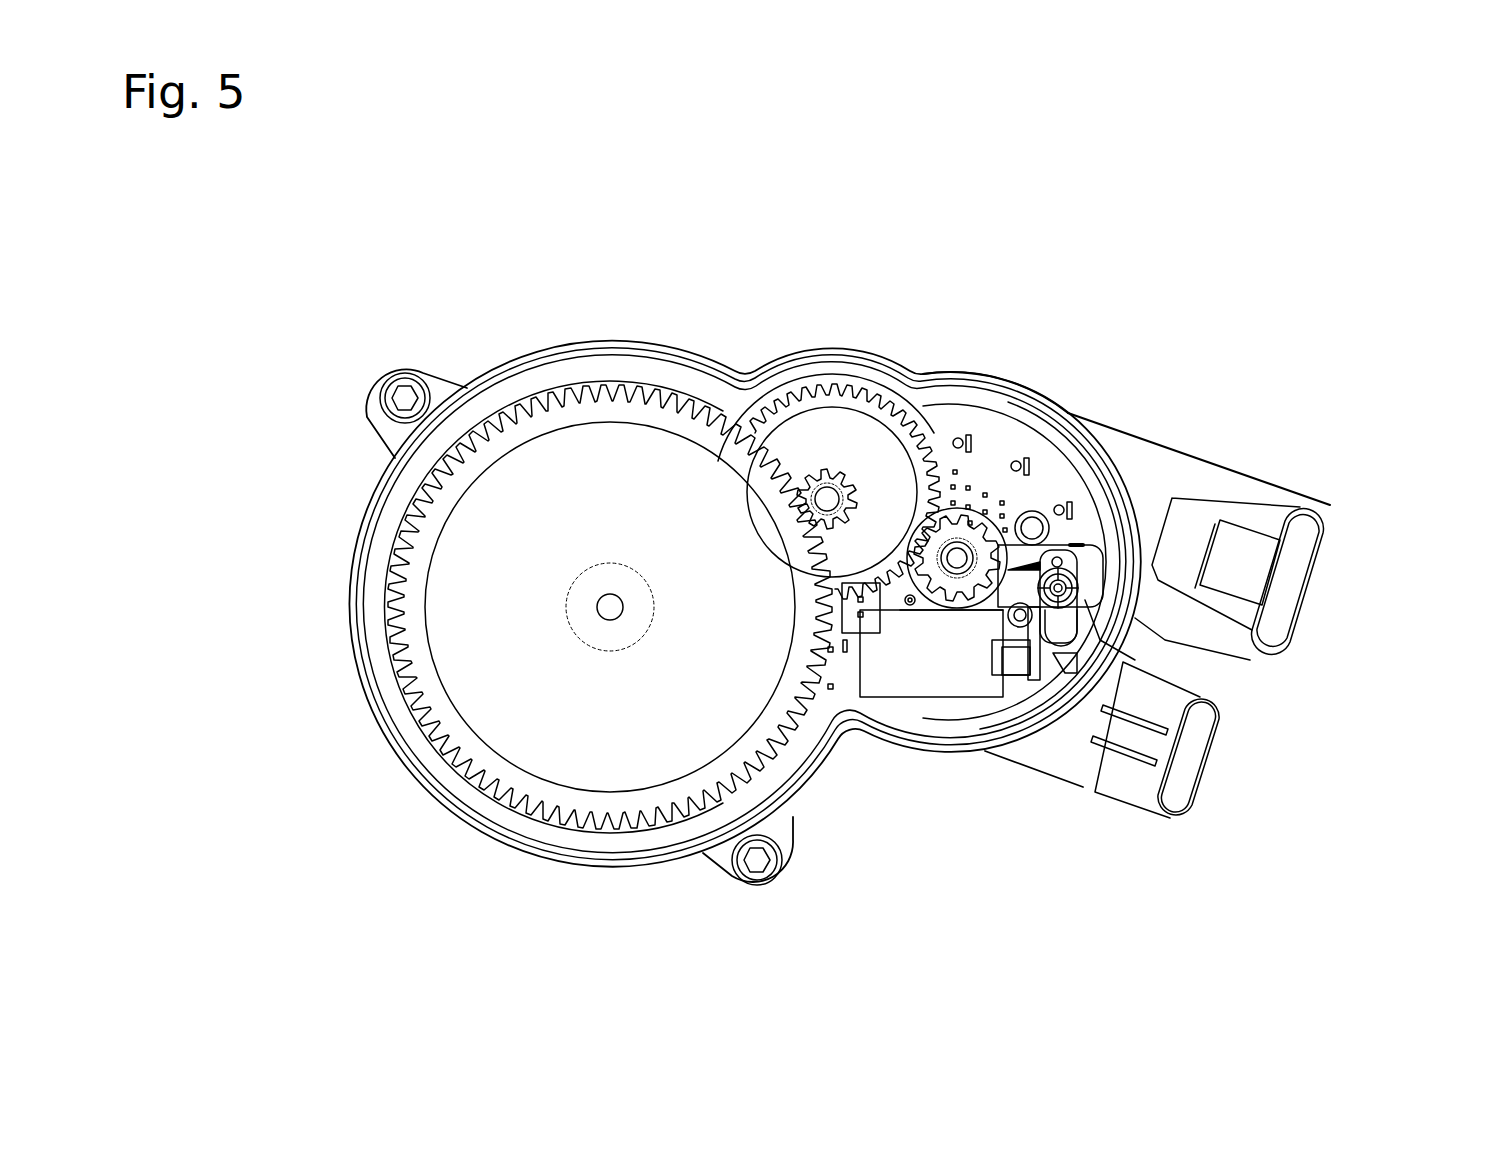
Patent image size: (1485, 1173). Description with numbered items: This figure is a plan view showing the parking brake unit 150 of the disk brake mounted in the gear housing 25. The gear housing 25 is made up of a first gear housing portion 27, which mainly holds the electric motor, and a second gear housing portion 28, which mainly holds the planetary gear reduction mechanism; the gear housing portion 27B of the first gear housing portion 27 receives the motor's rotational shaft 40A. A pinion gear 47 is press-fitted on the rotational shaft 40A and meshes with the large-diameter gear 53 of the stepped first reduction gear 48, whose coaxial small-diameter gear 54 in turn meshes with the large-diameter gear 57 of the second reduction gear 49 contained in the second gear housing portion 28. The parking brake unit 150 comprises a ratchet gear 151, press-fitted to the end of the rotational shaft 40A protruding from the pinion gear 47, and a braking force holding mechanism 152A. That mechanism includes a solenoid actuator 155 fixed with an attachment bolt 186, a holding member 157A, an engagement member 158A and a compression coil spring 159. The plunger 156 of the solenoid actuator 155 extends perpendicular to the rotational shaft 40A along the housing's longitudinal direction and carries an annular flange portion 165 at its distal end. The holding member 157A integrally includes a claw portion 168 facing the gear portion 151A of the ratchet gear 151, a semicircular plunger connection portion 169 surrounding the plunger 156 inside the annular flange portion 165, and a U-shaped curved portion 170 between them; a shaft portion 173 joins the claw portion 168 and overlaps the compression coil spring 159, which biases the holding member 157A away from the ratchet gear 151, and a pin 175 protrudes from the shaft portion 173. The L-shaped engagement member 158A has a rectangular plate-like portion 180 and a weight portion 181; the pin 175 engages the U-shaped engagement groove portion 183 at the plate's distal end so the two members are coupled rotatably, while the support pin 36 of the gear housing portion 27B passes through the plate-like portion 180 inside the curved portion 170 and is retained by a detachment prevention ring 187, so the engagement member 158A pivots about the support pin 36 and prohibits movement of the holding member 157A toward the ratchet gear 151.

The gear housing 25 is at (581, 317).
The first gear housing portion 27 is at (1061, 375).
The gear housing portion 27B is at (960, 400).
The second gear housing portion 28 is at (463, 372).
The support pin 36 is at (1080, 620).
The rotational shaft 40A is at (1022, 383).
The pinion gear 47 is at (964, 531).
The first reduction gear 48 is at (834, 410).
The second reduction gear 49 is at (610, 686).
The large-diameter gear 53 is at (843, 409).
The small-diameter gear 54 is at (819, 470).
The large-diameter gear 57 is at (558, 832).
The parking brake unit 150 is at (996, 622).
The ratchet gear 151 is at (953, 612).
The gear portion 151A is at (1047, 548).
The braking force holding mechanism 152A is at (1095, 585).
The solenoid actuator 155 is at (905, 675).
The plunger 156 is at (1032, 650).
The holding member 157A is at (1232, 520).
The engagement member 158A is at (1185, 735).
The compression coil spring 159 is at (1060, 560).
The annular flange portion 165 is at (1070, 660).
The claw portion 168 is at (1057, 548).
The plunger connection portion 169 is at (1050, 650).
The curved portion 170 is at (1075, 596).
The shaft portion 173 is at (1070, 565).
The pin 175 is at (1100, 600).
The plate-like portion 180 is at (1070, 588).
The weight portion 181 is at (1130, 668).
The engagement groove portion 183 is at (1085, 570).
The attachment bolt 186 is at (1012, 640).
The detachment prevention ring 187 is at (1068, 603).